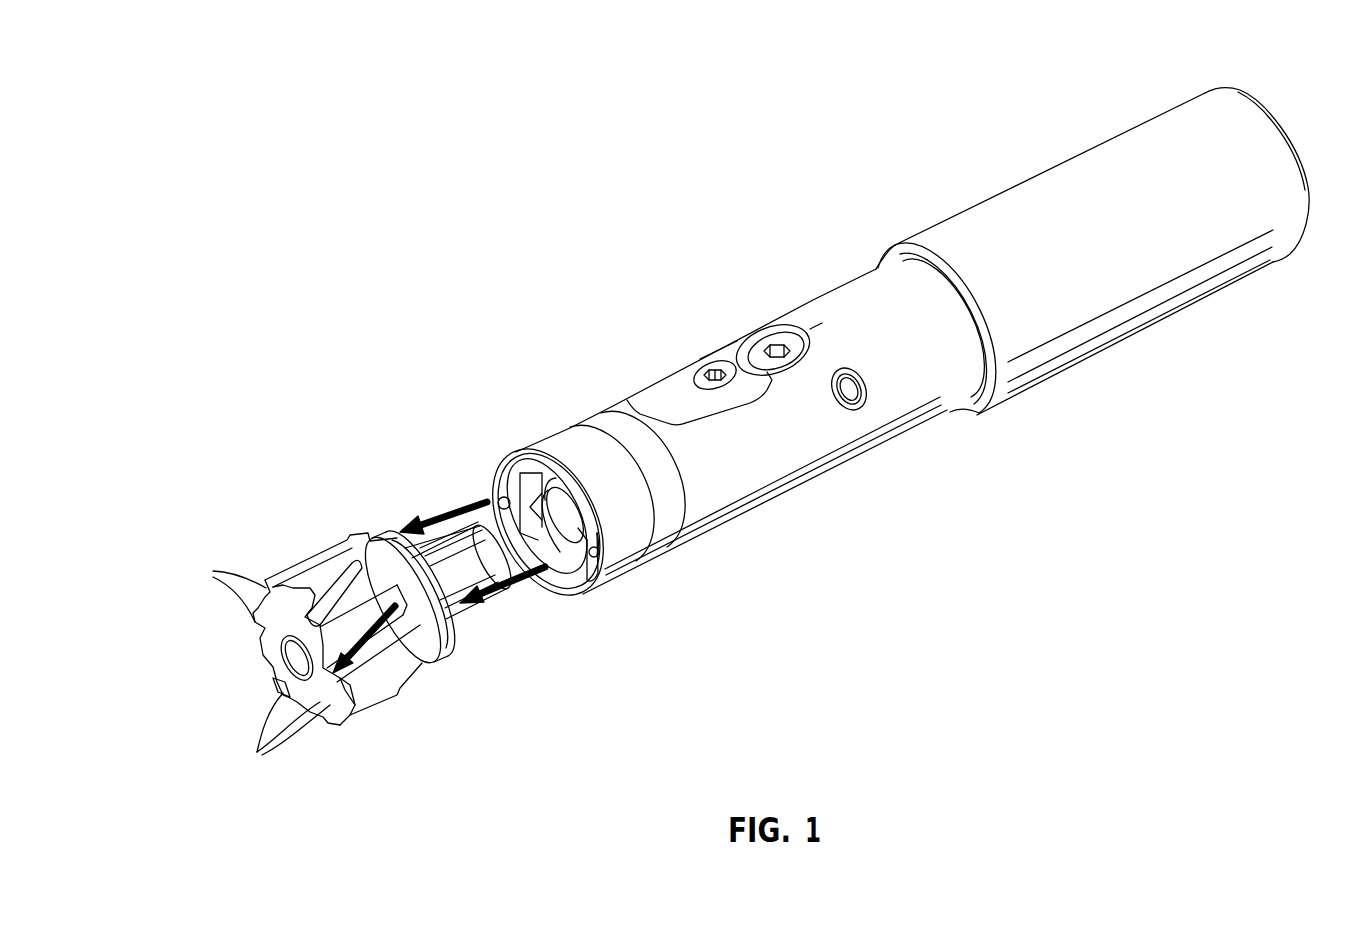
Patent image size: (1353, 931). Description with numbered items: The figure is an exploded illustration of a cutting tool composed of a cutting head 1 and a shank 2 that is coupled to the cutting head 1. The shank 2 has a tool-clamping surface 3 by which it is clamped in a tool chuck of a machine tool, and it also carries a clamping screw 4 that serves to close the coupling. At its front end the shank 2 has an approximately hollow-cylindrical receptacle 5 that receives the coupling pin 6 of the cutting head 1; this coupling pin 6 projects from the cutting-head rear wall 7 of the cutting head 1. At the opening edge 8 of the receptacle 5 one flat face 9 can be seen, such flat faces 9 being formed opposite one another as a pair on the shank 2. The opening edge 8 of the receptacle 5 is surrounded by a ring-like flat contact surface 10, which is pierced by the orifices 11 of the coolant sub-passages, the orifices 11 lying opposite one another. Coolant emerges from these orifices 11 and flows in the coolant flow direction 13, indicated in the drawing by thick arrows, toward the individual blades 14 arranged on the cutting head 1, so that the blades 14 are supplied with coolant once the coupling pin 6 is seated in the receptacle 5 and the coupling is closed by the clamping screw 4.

The cutting head 1 is at (303, 545).
The shank 2 is at (823, 278).
The tool-clamping surface 3 is at (1073, 175).
The clamping screw 4 is at (712, 370).
The receptacle 5 is at (573, 593).
The coupling pin 6 is at (462, 613).
The cutting-head rear wall 7 is at (443, 648).
The opening edge 8 is at (592, 570).
The flat face 9 is at (533, 470).
The flat contact surface 10 is at (545, 470).
The orifice 11 is at (499, 500).
The coolant flow direction 13 is at (410, 530).
The blade 14 is at (255, 666).